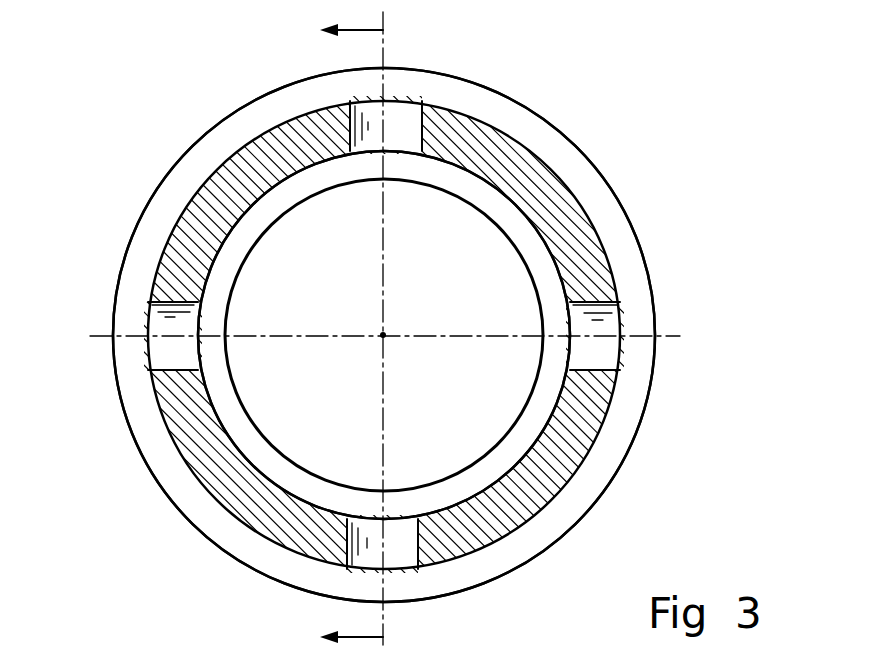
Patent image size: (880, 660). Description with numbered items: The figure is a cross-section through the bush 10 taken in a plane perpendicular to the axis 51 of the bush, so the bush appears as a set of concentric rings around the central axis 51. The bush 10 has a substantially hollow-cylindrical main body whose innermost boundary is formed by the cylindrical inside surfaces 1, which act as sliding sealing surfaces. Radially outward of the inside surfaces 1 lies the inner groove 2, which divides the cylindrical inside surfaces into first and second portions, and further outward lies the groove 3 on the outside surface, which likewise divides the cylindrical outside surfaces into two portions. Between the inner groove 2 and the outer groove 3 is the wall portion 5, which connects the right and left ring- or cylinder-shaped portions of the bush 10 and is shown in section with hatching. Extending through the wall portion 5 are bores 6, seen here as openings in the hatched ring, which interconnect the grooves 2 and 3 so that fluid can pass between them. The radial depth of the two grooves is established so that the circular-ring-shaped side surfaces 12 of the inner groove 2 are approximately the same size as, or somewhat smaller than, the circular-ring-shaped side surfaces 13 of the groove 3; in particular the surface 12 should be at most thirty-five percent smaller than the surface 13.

The cylindrical inside surfaces 1 is at (477, 458).
The inner groove 2 is at (538, 410).
The outer groove 3 is at (605, 456).
The wall portion 5 is at (512, 163).
The bores 6 is at (402, 118).
The bush 10 is at (642, 157).
The side surfaces of the inner groove 12 is at (228, 416).
The side surfaces of the outer groove 13 is at (167, 455).
The axis 51 is at (383, 335).